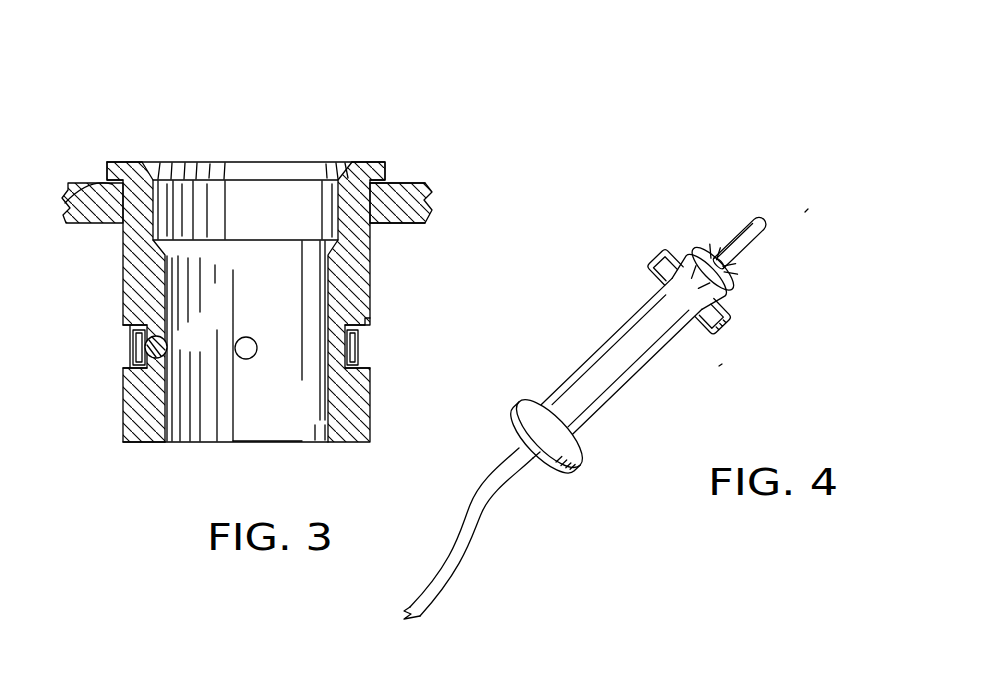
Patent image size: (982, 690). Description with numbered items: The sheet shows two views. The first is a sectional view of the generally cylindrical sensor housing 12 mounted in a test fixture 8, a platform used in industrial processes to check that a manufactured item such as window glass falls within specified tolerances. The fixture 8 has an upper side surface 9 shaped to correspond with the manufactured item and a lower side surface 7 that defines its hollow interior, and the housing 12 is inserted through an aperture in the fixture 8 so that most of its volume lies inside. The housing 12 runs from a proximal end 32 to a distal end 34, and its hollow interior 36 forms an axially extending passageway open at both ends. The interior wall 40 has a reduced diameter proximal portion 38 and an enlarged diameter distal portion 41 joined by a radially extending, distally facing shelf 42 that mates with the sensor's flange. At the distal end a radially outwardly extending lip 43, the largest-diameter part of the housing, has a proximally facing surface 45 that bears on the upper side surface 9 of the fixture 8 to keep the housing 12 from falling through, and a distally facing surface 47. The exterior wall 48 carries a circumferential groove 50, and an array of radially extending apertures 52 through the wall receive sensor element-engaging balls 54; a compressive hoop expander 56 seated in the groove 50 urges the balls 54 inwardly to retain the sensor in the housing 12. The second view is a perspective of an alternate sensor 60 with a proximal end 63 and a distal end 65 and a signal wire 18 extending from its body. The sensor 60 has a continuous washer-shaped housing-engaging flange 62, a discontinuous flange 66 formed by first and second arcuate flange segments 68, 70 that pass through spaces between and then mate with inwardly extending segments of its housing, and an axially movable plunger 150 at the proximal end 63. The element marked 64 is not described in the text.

In FIG. 3, the lower side surface 7 is at (383, 232).
In FIG. 3, the test fixture 8 is at (93, 225).
In FIG. 3, the upper side surface 9 is at (412, 185).
In FIG. 3, the sensor housing 12 is at (328, 90).
In FIG. 4, the signal wire 18 is at (470, 503).
In FIG. 3, the proximal end 32 is at (190, 447).
In FIG. 3, the distal end 34 is at (242, 118).
In FIG. 3, the hollow interior 36 is at (248, 440).
In FIG. 3, the reduced diameter proximal portion 38 is at (327, 415).
In FIG. 3, the interior wall 40 is at (265, 388).
In FIG. 3, the enlarged diameter distal portion 41 is at (155, 217).
In FIG. 3, the shelf 42 is at (160, 242).
In FIG. 3, the lip 43 is at (150, 148).
In FIG. 3, the radially extending surface 45 is at (62, 188).
In FIG. 3, the axially distally facing surface 47 is at (133, 160).
In FIG. 3, the exterior wall 48 is at (121, 298).
In FIG. 3, the circumferential groove 50 is at (363, 367).
In FIG. 3, the radially extending apertures 52 is at (245, 337).
In FIG. 3, the sensor element-engaging balls 54 is at (168, 352).
In FIG. 3, the compressive hoop expander 56 is at (355, 348).
In FIG. 4, the sensor 60 is at (723, 365).
In FIG. 4, the housing-engaging flange 62 is at (587, 477).
In FIG. 4, the proximal end 63 is at (807, 210).
In FIG. 4, the flange ring 64 is at (578, 450).
In FIG. 4, the distal end 65 is at (550, 477).
In FIG. 4, the discontinuous flange 66 is at (680, 243).
In FIG. 4, the first arcuate flange segment 68 is at (660, 275).
In FIG. 4, the second arcuate flange segment 70 is at (727, 303).
In FIG. 4, the plunger 150 is at (765, 227).